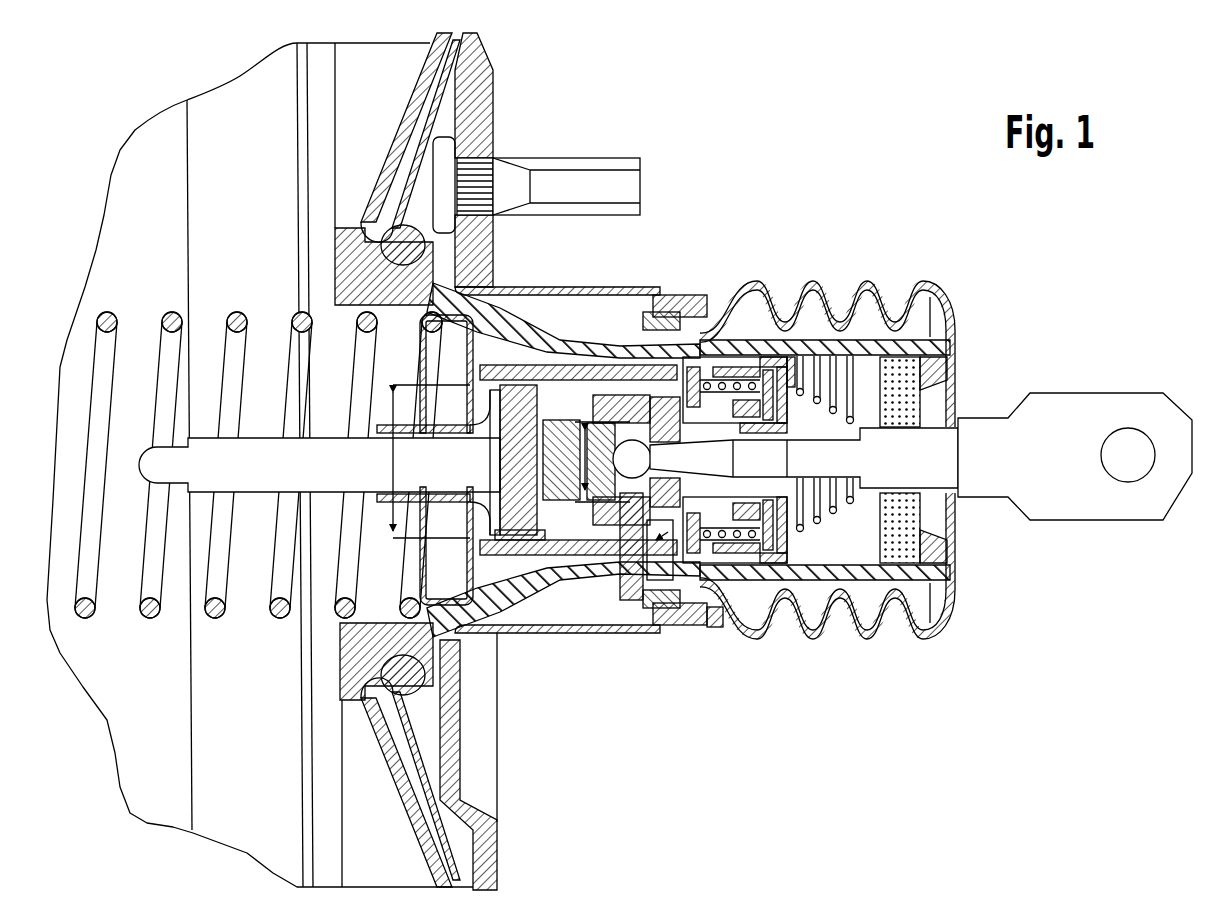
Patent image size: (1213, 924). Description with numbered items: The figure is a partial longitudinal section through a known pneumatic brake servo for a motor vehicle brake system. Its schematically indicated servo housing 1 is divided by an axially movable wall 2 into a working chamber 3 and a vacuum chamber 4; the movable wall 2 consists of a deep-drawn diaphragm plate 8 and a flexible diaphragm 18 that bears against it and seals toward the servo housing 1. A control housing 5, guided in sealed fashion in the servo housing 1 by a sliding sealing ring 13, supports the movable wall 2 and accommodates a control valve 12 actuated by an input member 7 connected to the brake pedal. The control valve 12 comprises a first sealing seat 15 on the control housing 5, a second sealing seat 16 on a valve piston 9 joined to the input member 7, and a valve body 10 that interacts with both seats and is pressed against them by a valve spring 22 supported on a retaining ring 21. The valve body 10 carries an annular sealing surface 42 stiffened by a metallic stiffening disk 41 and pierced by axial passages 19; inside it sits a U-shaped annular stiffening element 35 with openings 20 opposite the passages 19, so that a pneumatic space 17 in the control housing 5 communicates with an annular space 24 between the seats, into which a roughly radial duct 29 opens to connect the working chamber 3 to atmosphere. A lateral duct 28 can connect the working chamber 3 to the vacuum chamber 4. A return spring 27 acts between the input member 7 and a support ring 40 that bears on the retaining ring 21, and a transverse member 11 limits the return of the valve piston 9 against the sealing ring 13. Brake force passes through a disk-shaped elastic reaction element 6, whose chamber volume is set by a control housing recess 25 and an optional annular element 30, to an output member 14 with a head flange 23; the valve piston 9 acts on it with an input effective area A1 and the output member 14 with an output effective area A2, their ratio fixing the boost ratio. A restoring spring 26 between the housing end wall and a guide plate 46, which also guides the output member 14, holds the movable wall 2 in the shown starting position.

The servo housing 1 is at (524, 70).
The movable wall 2 is at (416, 85).
The working chamber 3 is at (422, 750).
The vacuum chamber 4 is at (254, 768).
The control housing 5 is at (817, 400).
The reaction element 6 is at (512, 408).
The input member 7 is at (933, 440).
The diaphragm plate 8 is at (406, 125).
The valve piston 9 is at (592, 360).
The valve body 10 is at (770, 373).
The transverse member 11 is at (650, 582).
The control valve 12 is at (630, 600).
The sliding sealing ring 13 is at (670, 625).
The output member 14 is at (254, 458).
The first sealing seat 15 is at (650, 316).
The second sealing seat 16 is at (598, 560).
The pneumatic space 17 is at (822, 337).
The flexible diaphragm 18 is at (445, 98).
The axial passages 19 is at (678, 608).
The openings 20 is at (730, 582).
The retaining ring 21 is at (790, 522).
The valve spring 22 is at (783, 632).
The head flange 23 is at (492, 440).
The annular space 24 is at (627, 388).
The control housing recess 25 is at (500, 530).
The restoring spring 26 is at (149, 620).
The return spring 27 is at (877, 367).
The duct 28 is at (517, 353).
The radially running duct 29 is at (560, 565).
The annular element 30 is at (570, 390).
The stiffening element 35 is at (743, 370).
The support ring 40 is at (885, 560).
The stiffening disk 41 is at (712, 627).
The sealing surface 42 is at (688, 296).
The guide plate 46 is at (411, 552).
The input effective area A1 is at (592, 462).
The output effective area A2 is at (416, 461).